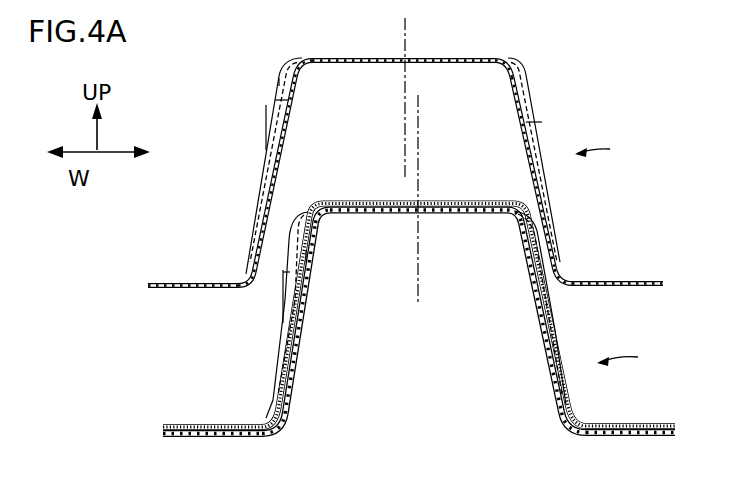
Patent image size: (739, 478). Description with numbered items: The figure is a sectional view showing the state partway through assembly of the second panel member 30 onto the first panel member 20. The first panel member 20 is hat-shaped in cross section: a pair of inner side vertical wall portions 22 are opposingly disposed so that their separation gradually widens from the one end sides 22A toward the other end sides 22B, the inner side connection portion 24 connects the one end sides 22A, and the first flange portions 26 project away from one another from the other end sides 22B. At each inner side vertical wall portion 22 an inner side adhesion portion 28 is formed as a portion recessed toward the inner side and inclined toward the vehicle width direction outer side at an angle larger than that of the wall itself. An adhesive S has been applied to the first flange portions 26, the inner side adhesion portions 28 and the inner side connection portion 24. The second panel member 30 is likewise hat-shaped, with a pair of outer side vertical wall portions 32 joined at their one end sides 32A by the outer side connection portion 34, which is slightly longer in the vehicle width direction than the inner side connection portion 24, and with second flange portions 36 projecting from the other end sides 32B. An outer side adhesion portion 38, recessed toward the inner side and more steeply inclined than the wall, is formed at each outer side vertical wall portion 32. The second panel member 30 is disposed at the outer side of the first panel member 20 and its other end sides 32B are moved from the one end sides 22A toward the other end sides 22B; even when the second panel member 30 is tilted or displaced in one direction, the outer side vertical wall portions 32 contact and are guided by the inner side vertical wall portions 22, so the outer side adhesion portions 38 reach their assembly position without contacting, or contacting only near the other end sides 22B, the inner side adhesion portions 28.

The first panel member 20 is at (634, 352).
The inner side vertical wall portion 22 is at (277, 312).
The one end side 22A is at (301, 211).
The other end side 22B is at (258, 413).
The inner side connection portion 24 is at (436, 202).
The first flange portion 26 is at (191, 438).
The inner side adhesion portion 28 is at (296, 337).
The second panel member 30 is at (611, 144).
The outer side vertical wall portion 32 is at (262, 190).
The one end side 32A is at (303, 61).
The other end side 32B is at (240, 275).
The outer side connection portion 34 is at (438, 58).
The second flange portion 36 is at (169, 290).
The outer side adhesion portion 38 is at (265, 148).
The adhesive S is at (482, 201).